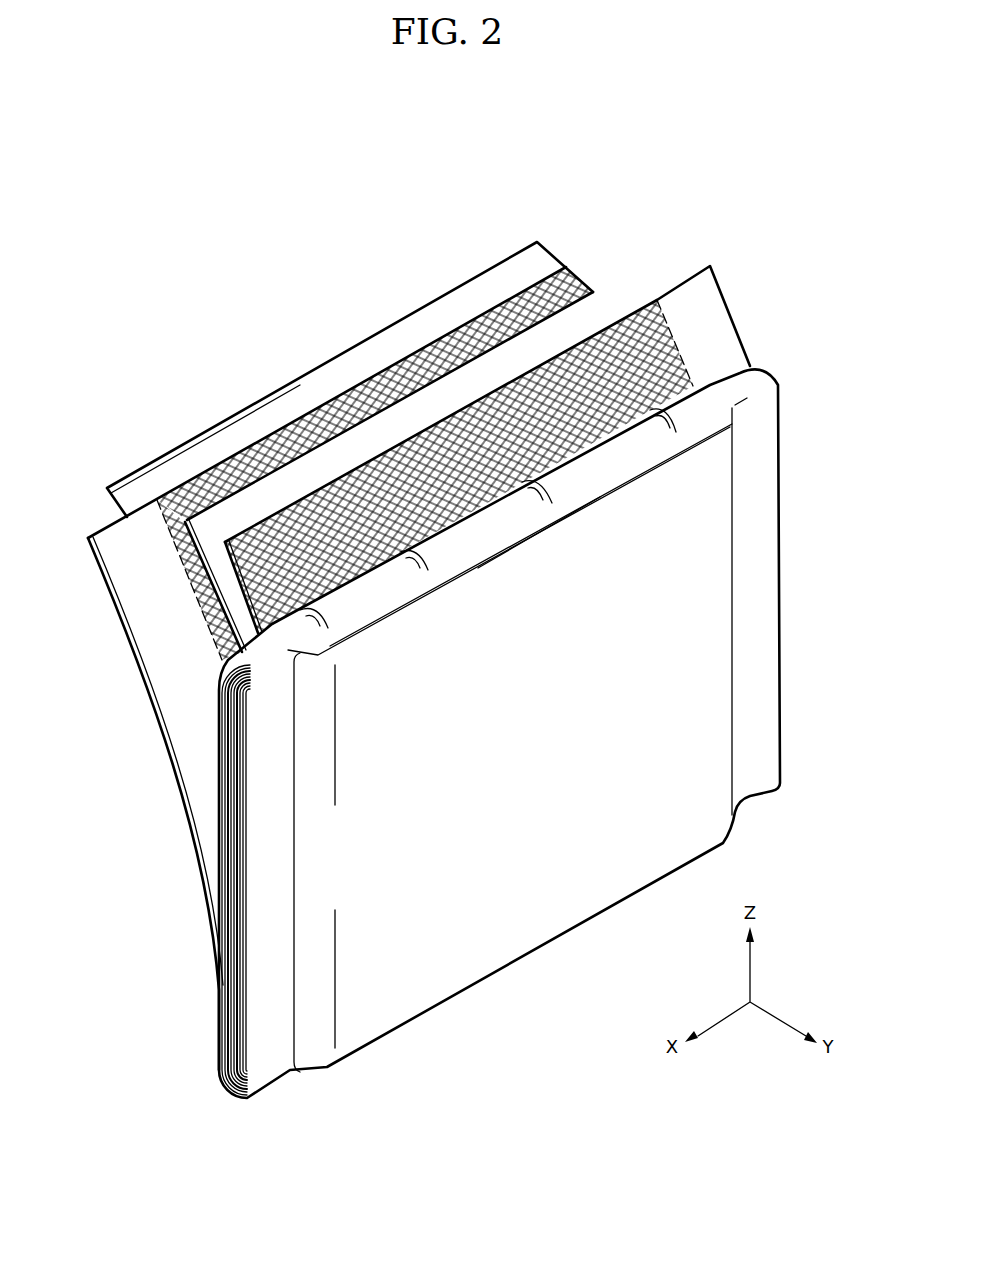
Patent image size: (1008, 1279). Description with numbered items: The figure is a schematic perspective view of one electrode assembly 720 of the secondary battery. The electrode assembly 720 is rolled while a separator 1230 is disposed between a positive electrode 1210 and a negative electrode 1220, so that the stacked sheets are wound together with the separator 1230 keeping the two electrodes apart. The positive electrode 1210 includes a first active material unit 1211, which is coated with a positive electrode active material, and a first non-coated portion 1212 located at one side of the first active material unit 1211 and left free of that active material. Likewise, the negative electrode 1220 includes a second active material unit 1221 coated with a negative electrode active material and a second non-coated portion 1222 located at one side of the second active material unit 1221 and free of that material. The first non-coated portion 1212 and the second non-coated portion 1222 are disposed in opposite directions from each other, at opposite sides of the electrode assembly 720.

The electrode assembly 720 is at (760, 252).
The positive electrode 1210 is at (340, 668).
The first active material unit 1211 is at (374, 463).
The first non-coated portion 1212 is at (137, 580).
The negative electrode 1220 is at (487, 400).
The second active material unit 1221 is at (607, 362).
The second non-coated portion 1222 is at (703, 294).
The separator 1230 is at (497, 363).